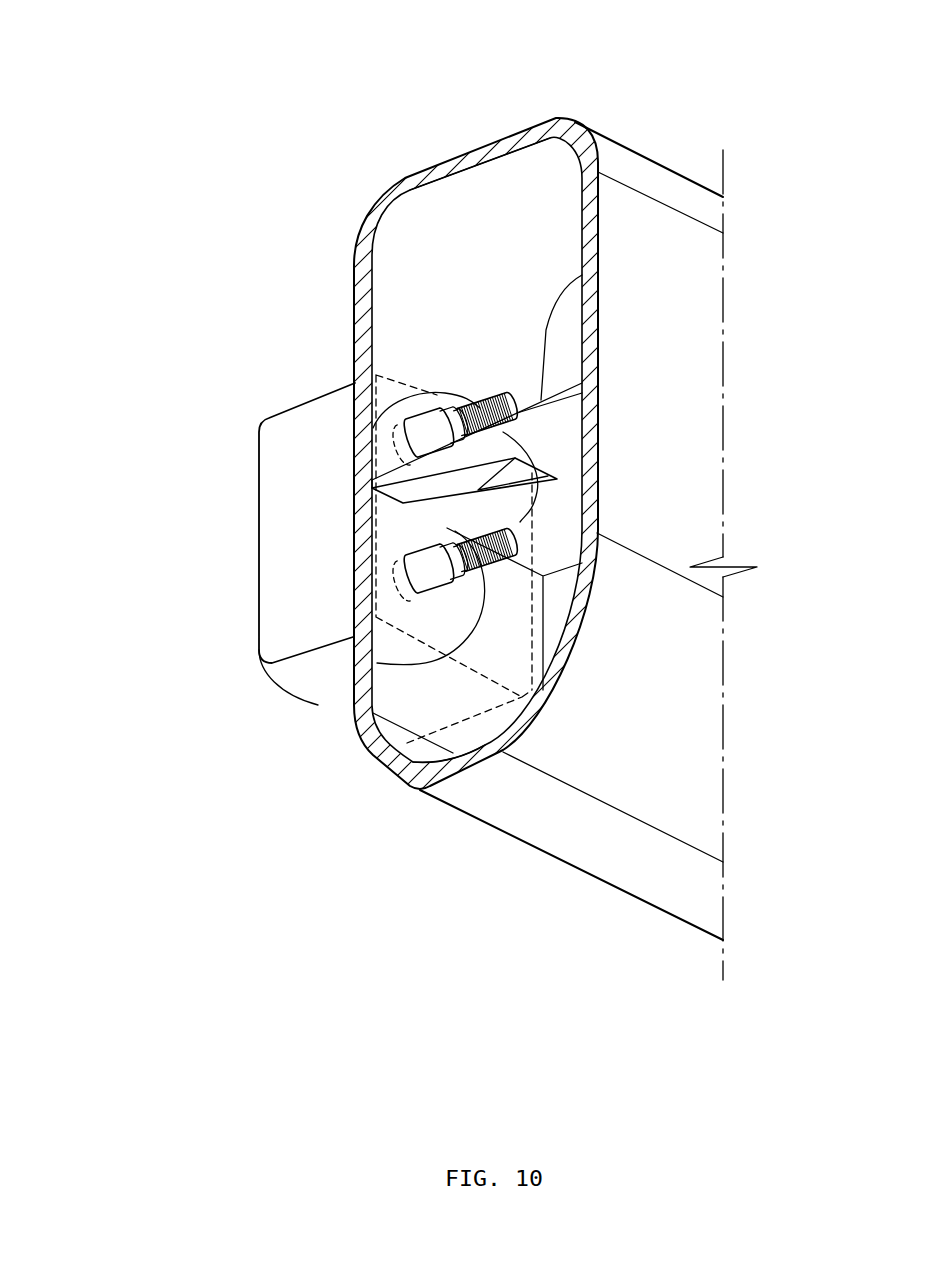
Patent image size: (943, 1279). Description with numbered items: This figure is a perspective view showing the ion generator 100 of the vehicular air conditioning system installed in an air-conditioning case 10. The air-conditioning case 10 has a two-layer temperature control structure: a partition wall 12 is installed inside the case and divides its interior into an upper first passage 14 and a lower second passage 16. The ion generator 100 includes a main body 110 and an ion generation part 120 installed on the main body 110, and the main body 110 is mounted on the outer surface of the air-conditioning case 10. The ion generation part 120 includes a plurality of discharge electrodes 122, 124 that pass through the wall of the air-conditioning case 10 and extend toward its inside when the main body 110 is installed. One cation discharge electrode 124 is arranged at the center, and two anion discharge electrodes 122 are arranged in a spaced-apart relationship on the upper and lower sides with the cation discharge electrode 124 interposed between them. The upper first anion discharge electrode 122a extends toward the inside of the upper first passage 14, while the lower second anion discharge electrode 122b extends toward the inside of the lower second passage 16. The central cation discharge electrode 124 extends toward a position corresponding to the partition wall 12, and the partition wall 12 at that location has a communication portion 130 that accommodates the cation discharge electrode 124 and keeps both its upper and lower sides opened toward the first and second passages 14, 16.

The air-conditioning case 10 is at (542, 118).
The partition wall 12 is at (575, 352).
The first passage 14 is at (474, 291).
The second passage 16 is at (488, 644).
The ion generator 100 is at (277, 410).
The main body 110 is at (275, 464).
The ion generation part 120 is at (102, 577).
The anion discharge electrode 122 is at (314, 573).
The first anion discharge electrode 122a is at (400, 410).
The second anion discharge electrode 122b is at (377, 663).
The cation discharge electrode 124 is at (446, 528).
The communication portion 130 is at (527, 500).